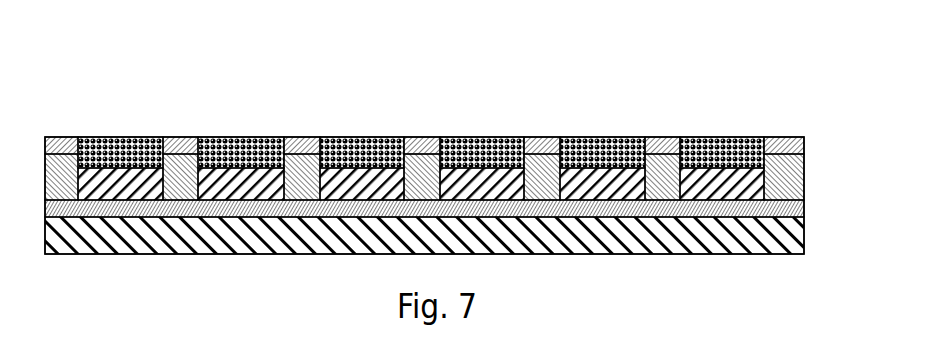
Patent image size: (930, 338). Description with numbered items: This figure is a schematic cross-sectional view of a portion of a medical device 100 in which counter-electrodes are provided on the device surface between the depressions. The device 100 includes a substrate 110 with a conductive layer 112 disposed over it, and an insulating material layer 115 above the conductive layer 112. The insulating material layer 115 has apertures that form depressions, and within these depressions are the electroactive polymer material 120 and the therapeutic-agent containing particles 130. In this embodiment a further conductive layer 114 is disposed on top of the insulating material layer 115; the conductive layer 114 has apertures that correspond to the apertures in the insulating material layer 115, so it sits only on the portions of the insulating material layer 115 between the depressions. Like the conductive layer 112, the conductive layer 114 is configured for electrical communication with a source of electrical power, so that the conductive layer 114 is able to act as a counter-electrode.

The medical device 100 is at (776, 105).
The substrate 110 is at (493, 233).
The conductive layer 112 is at (218, 213).
The conductive layer 114 is at (63, 145).
The insulating material layer 115 is at (182, 163).
The electroactive polymer material 120 is at (137, 183).
The therapeutic-agent containing particles 130 is at (105, 155).